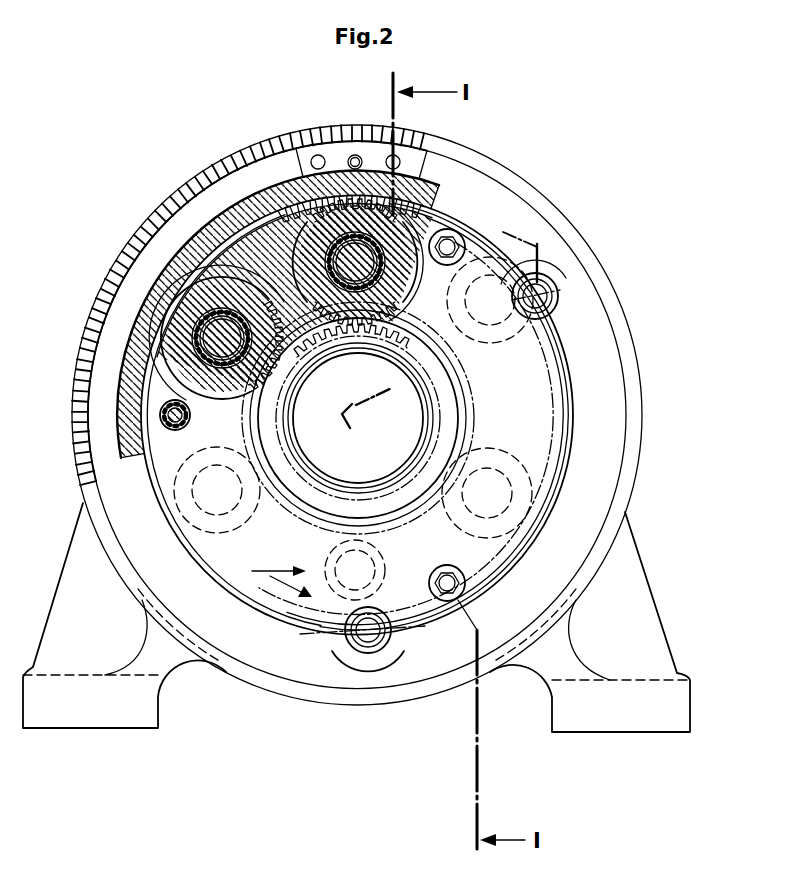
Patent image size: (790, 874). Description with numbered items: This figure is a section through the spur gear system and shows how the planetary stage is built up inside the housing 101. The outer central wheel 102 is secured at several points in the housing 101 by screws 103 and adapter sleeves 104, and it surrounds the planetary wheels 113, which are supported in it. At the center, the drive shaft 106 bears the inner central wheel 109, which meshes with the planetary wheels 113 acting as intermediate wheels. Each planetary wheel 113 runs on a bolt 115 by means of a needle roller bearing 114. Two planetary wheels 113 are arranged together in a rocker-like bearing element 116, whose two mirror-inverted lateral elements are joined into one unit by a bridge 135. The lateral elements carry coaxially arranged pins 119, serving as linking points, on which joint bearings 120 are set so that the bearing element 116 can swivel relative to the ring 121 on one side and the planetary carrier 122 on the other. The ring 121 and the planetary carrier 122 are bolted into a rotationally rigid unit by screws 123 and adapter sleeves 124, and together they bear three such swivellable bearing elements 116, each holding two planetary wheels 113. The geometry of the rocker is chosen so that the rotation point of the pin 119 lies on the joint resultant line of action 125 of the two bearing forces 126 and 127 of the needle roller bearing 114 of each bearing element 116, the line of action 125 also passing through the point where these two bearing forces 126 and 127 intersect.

The housing 101 is at (132, 243).
The outer central wheel 102 is at (257, 203).
The screws 103 is at (316, 155).
The adapter sleeves 104 is at (355, 155).
The drive shaft 106 is at (413, 400).
The inner central wheel 109 is at (358, 418).
The planetary wheels 113 is at (345, 292).
The needle roller bearing 114 is at (160, 255).
The bolts 115 is at (193, 320).
The bearing element 116 is at (200, 380).
The pins 119 is at (547, 295).
The joint bearings 120 is at (548, 268).
The ring 121 is at (537, 247).
The planetary carrier 122 is at (170, 465).
The screws 123 is at (455, 243).
The adapter sleeves 124 is at (163, 415).
The line of action 125 is at (293, 620).
The bearing force 126 is at (322, 625).
The bearing force 127 is at (277, 578).
The bridge 135 is at (207, 220).